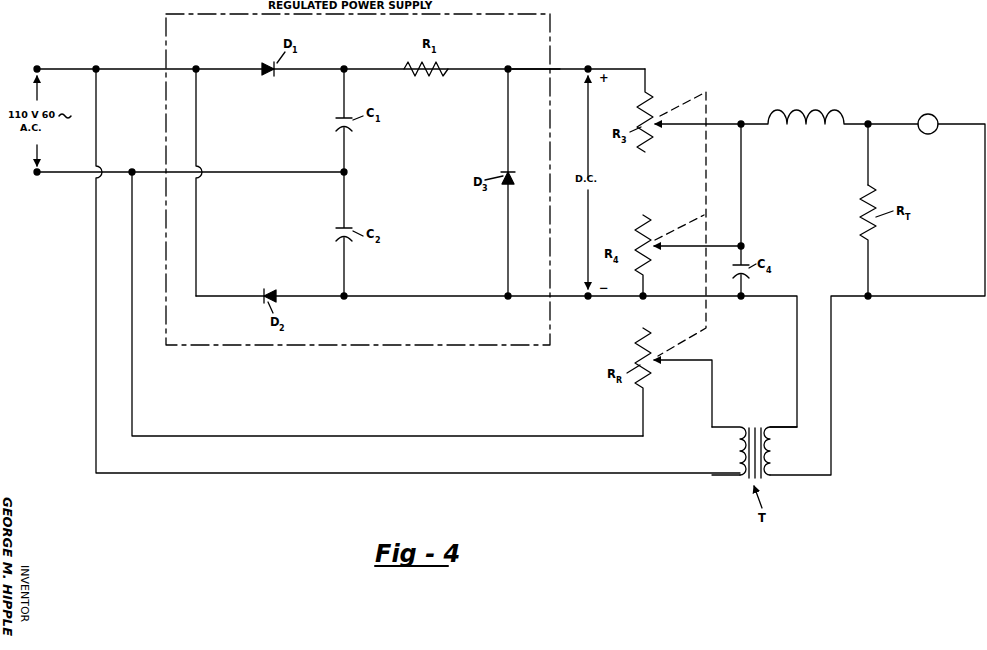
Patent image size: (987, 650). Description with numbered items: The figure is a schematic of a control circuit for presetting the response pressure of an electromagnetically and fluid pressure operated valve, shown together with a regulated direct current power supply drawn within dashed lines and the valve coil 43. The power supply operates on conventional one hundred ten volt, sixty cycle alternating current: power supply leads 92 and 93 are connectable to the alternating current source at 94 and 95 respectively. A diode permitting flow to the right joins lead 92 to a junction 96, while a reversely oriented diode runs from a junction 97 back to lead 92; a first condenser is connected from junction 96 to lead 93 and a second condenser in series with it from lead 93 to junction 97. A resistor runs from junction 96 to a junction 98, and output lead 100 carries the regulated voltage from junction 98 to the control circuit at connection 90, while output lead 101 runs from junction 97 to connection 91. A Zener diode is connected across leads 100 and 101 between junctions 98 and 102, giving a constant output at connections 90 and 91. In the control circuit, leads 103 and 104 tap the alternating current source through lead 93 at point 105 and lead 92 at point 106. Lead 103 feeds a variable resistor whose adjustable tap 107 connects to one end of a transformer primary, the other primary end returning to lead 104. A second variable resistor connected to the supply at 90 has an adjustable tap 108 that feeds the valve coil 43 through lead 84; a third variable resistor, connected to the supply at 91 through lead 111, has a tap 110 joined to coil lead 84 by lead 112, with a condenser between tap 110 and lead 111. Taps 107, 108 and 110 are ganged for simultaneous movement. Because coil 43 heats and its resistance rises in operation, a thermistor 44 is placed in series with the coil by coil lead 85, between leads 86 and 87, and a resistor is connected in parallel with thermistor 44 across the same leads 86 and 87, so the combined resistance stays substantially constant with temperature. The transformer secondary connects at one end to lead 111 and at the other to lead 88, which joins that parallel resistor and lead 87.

The coil 43 is at (806, 115).
The thermistor 44 is at (933, 115).
The coil lead 84 is at (751, 122).
The coil lead 85 is at (857, 122).
The lead 86 is at (869, 173).
The lead 87 is at (985, 173).
The lead 88 is at (832, 374).
The connection 90 is at (592, 67).
The connection 91 is at (590, 300).
The power supply lead 92 is at (140, 67).
The power supply lead 93 is at (118, 174).
The alternating current connection point 94 is at (38, 66).
The alternating current connection point 95 is at (38, 176).
The junction 96 is at (346, 67).
The junction 97 is at (347, 300).
The junction 98 is at (507, 67).
The output lead 100 is at (532, 67).
The output lead 101 is at (446, 300).
The junction 102 is at (509, 300).
The lead 103 is at (134, 360).
The lead 104 is at (98, 117).
The connection point 105 is at (134, 170).
The connection point 106 is at (97, 67).
The adjustable tap 107 is at (680, 362).
The adjustable tap 108 is at (688, 126).
The tap 110 is at (676, 249).
The lead 111 is at (672, 299).
The lead 112 is at (742, 187).